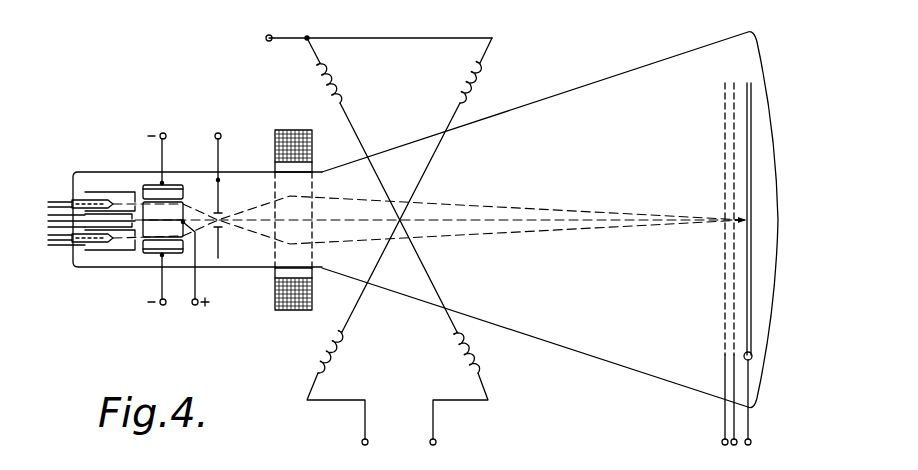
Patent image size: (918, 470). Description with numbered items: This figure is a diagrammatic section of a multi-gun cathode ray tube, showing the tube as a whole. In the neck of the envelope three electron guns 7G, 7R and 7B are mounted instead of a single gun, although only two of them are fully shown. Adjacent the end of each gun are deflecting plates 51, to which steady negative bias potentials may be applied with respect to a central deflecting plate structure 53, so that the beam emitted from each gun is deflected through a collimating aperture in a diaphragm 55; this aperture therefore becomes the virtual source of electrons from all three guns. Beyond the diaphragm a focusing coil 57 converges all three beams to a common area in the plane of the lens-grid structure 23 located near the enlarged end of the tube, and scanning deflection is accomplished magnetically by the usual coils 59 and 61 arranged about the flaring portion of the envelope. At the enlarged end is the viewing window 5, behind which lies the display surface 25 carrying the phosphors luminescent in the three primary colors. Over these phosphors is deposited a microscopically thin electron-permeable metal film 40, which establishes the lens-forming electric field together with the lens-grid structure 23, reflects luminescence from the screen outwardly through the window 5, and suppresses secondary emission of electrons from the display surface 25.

The viewing window 5 is at (774, 113).
The electron gun 7G is at (93, 190).
The electron gun 7B is at (120, 205).
The electron gun 7R is at (110, 250).
The lens-grid structure 23 is at (718, 164).
The display surface 25 is at (752, 227).
The metal film 40 is at (752, 356).
The deflecting plates 51 is at (172, 185).
The central deflecting plate structure 53 is at (184, 204).
The diaphragm 55 is at (219, 192).
The focusing coil 57 is at (293, 128).
The scanning deflection coil 59 is at (326, 349).
The scanning deflection coil 61 is at (478, 355).